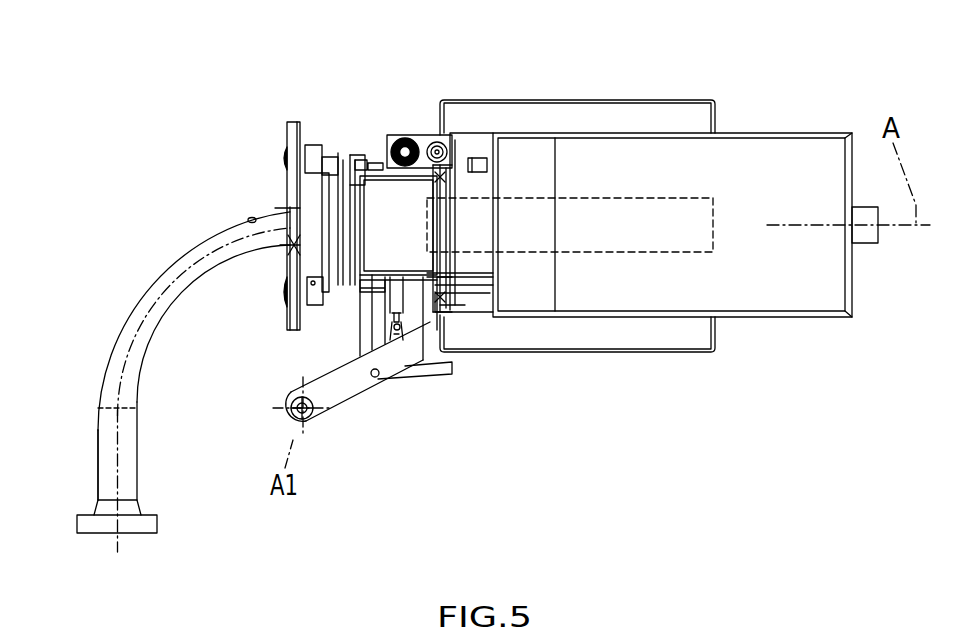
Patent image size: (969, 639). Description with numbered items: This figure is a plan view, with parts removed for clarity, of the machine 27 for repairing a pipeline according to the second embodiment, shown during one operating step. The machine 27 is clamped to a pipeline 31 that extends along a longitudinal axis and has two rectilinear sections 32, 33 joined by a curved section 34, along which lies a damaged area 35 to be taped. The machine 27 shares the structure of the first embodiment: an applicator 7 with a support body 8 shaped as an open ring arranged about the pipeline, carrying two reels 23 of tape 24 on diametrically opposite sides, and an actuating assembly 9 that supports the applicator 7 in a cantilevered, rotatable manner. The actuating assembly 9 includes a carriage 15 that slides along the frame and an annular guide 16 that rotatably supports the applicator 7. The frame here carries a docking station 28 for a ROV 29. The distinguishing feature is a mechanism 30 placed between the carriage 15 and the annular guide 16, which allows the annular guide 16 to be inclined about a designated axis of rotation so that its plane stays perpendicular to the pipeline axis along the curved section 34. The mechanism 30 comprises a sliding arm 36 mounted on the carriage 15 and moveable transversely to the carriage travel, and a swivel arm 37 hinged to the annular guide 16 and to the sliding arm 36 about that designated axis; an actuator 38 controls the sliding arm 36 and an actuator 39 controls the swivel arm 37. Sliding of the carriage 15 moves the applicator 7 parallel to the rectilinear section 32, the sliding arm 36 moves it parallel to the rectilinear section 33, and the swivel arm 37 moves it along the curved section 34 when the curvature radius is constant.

The applicator 7 is at (325, 120).
The support body 8 is at (295, 240).
The actuating assembly 9 is at (148, 132).
The carriage 15 is at (585, 198).
The annular guide 16 is at (372, 157).
The reels 23 is at (285, 132).
The tape 24 is at (295, 122).
The machine 27 is at (397, 82).
The docking station 28 is at (450, 142).
The ROV 29 is at (727, 112).
The mechanism 30 is at (402, 388).
The pipeline 31 is at (138, 478).
The rectilinear section 32 is at (863, 237).
The rectilinear section 33 is at (98, 435).
The curved section 34 is at (140, 380).
The damaged area 35 is at (250, 212).
The sliding arm 36 is at (398, 293).
The swivel arm 37 is at (372, 308).
The actuator 38 is at (413, 333).
The actuator 39 is at (432, 370).